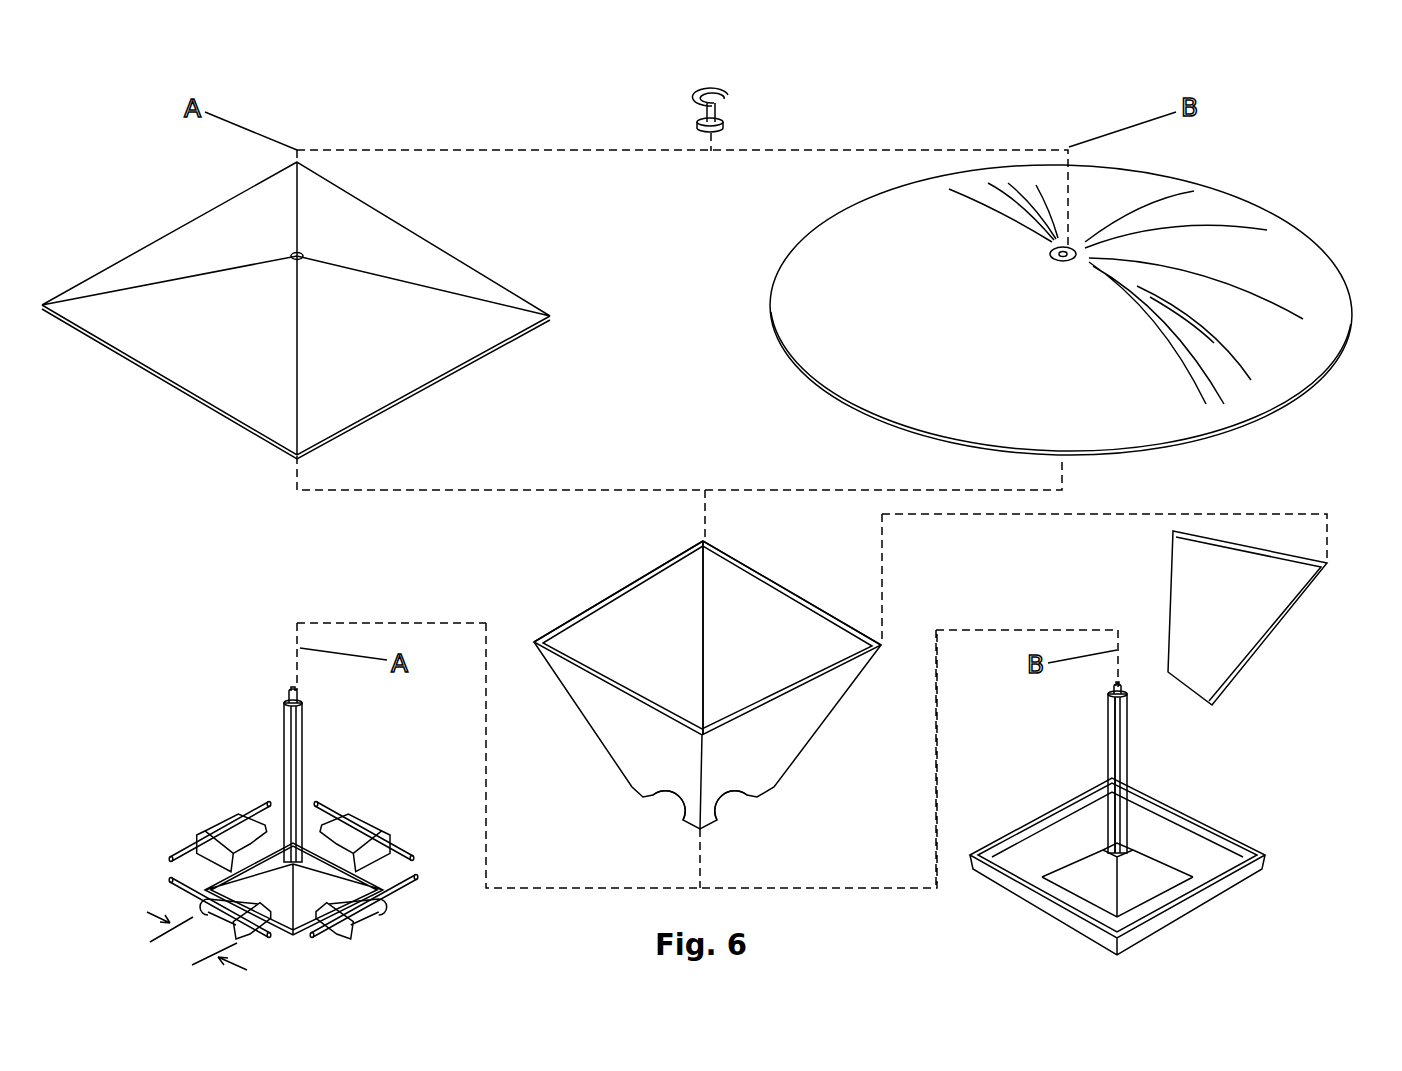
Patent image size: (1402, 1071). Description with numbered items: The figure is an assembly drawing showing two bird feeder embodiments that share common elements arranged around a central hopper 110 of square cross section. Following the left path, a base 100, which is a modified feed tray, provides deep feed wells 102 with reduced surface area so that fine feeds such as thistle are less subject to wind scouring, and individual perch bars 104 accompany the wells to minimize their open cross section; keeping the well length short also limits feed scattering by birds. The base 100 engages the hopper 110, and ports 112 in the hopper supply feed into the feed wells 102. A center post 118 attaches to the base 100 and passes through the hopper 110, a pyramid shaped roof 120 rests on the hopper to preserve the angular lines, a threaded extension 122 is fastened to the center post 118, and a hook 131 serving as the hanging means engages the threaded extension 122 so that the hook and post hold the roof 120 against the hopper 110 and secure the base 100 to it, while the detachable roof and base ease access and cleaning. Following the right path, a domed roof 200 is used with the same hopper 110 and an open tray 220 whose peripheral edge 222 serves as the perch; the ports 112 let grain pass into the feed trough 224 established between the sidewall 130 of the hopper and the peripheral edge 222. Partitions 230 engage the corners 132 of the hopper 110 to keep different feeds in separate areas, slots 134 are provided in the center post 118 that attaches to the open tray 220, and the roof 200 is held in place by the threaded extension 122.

The base 100 is at (672, 805).
The feed wells 102 is at (237, 820).
The perch bars 104 is at (200, 888).
The hopper 110 is at (679, 690).
The ports 112 is at (667, 807).
The center post 118 is at (283, 768).
The pyramid shaped roof 120 is at (167, 211).
The threaded extension 122 is at (290, 692).
The sidewall 130 is at (649, 752).
The hook 131 is at (727, 117).
The corners 132 is at (879, 637).
The slots 134 is at (1120, 737).
The domed roof 200 is at (1270, 190).
The open tray 220 is at (1158, 828).
The peripheral edge 222 is at (1054, 809).
The feed trough 224 is at (1180, 852).
The partitions 230 is at (1262, 655).